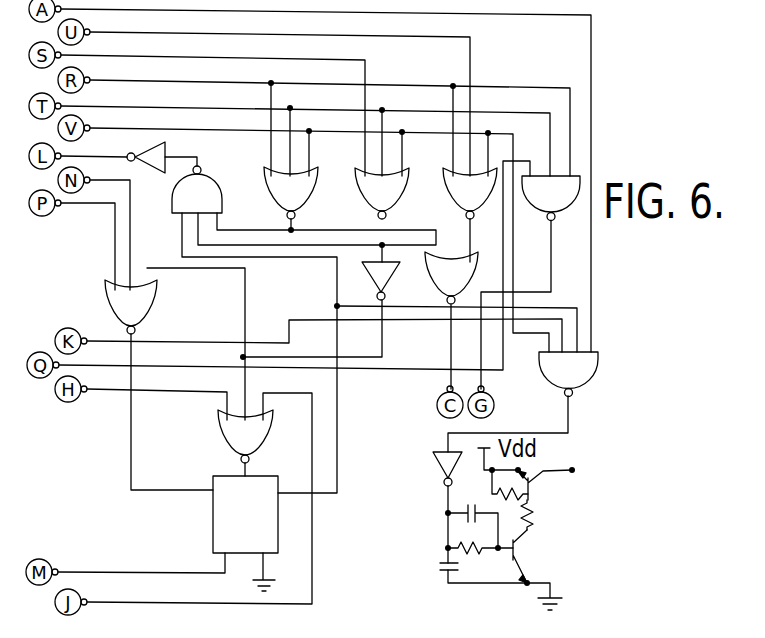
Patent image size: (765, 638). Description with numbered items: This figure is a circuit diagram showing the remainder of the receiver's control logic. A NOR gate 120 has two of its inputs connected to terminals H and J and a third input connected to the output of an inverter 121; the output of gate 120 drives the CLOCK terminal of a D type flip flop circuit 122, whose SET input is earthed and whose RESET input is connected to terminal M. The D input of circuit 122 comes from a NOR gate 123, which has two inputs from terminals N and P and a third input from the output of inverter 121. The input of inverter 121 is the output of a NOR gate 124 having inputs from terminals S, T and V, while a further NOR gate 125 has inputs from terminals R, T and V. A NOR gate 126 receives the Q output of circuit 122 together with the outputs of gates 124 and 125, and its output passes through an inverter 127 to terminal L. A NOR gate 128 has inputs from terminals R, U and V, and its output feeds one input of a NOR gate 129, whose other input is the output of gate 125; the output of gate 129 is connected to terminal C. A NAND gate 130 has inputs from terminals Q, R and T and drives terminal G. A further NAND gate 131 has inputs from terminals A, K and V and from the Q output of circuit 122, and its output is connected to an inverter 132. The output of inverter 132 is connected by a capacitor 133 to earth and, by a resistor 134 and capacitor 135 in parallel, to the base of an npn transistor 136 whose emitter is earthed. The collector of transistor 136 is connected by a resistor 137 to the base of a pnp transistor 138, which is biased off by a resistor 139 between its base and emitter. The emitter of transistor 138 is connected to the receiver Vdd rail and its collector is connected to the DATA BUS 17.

The DATA BUS 17 is at (573, 473).
The NOR gate 120 is at (272, 428).
The inverter 121 is at (366, 272).
The D type flip flop circuit 122 is at (213, 507).
The NOR gate 123 is at (151, 292).
The NOR gate 124 is at (354, 178).
The NOR gate 125 is at (265, 182).
The NOR gate 126 is at (221, 195).
The inverter 127 is at (143, 170).
The NOR gate 128 is at (443, 178).
The NOR gate 129 is at (428, 270).
The NAND gate 130 is at (537, 211).
The NAND gate 131 is at (543, 367).
The inverter 132 is at (442, 470).
The capacitor 133 is at (442, 570).
The resistor 134 is at (480, 564).
The capacitor 135 is at (467, 518).
The npn transistor 136 is at (525, 555).
The resistor 137 is at (532, 508).
The pnp transistor 138 is at (533, 476).
The resistor 139 is at (494, 495).